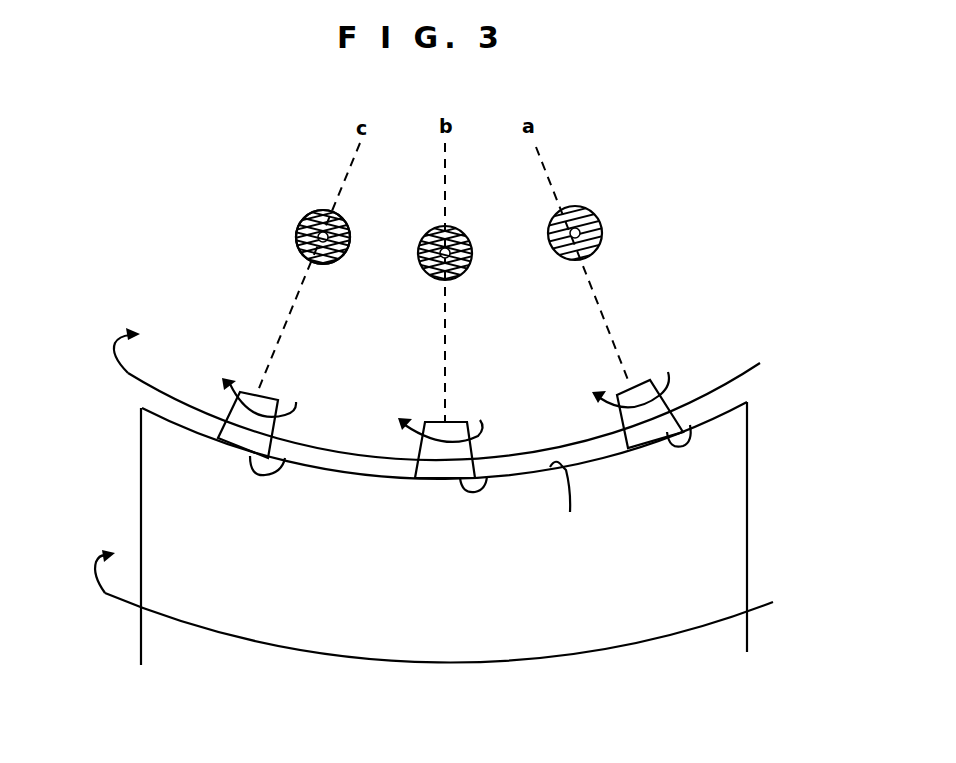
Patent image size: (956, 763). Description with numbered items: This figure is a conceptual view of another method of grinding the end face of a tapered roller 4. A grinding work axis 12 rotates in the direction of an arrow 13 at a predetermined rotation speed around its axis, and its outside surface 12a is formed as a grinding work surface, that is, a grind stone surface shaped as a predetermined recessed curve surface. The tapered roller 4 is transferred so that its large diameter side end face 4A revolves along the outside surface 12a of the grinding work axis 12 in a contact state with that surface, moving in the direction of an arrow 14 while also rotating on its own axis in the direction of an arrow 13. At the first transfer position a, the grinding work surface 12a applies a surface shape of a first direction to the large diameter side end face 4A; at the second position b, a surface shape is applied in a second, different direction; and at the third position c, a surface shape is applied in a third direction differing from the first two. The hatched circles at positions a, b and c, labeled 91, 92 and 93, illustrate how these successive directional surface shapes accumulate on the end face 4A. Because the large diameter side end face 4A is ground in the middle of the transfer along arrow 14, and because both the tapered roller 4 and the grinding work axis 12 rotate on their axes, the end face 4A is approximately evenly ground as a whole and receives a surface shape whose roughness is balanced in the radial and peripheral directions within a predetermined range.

The tapered roller 4 is at (252, 391).
The large diameter side end face 4A is at (287, 463).
The first coating layer of particle 91 is at (352, 242).
The second coating layer of particle 92 is at (342, 216).
The third coating layer of particle 93 is at (320, 210).
The grinding work axis 12 is at (733, 532).
The outside surface 12a is at (577, 501).
The arrow 13 is at (105, 593).
The arrow 14 is at (123, 377).